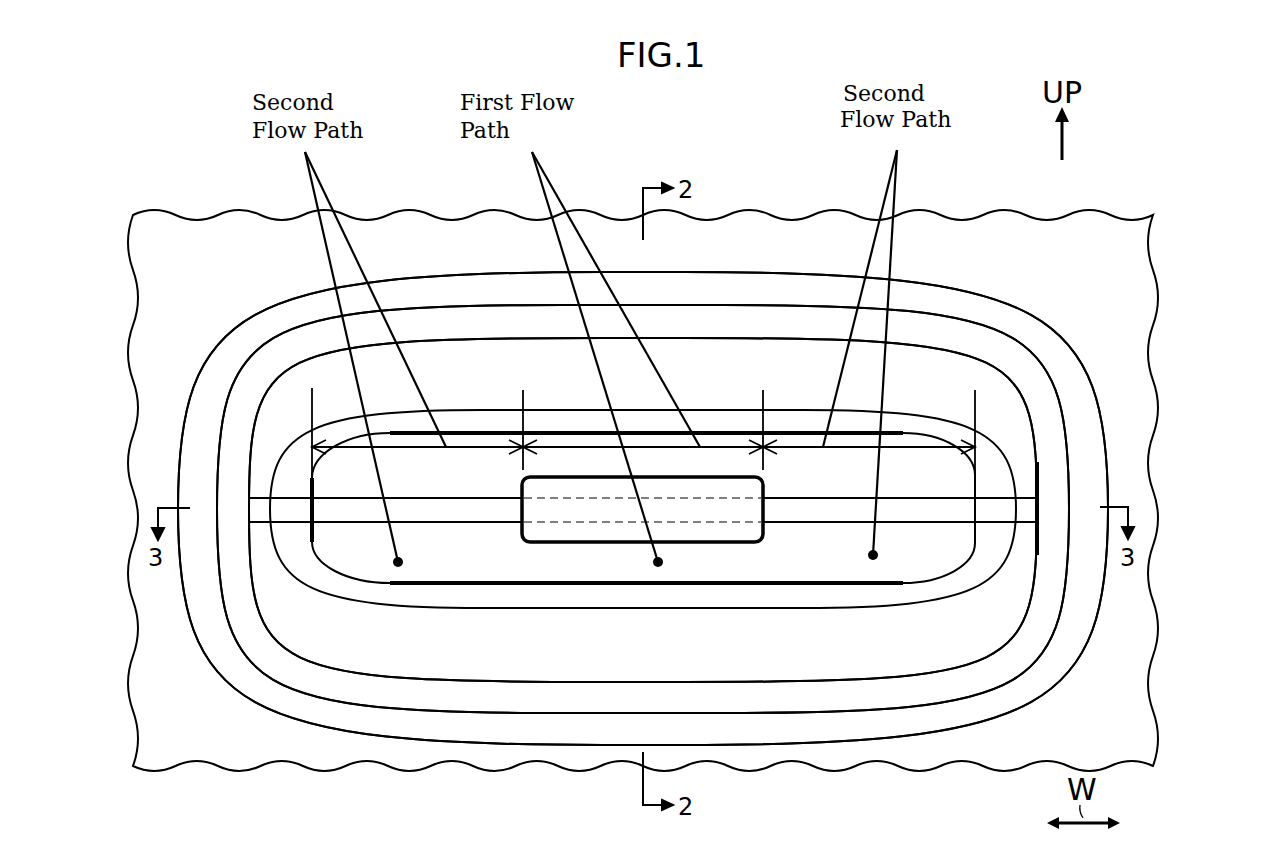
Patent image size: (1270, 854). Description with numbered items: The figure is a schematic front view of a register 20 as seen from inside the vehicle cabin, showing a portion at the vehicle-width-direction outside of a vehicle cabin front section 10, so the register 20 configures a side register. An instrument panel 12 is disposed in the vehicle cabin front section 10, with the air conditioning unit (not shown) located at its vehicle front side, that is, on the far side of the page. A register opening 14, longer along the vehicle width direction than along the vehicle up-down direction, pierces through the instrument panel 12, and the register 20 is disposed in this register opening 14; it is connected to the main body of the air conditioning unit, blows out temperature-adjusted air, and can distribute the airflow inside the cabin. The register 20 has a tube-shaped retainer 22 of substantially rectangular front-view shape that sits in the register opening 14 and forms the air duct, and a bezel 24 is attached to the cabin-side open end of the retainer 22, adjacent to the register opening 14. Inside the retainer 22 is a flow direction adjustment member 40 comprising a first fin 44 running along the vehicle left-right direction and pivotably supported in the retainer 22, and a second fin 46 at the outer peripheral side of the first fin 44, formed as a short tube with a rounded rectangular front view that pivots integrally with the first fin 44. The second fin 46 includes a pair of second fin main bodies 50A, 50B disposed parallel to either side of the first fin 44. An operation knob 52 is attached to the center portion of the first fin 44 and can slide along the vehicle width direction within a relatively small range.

The vehicle cabin front section 10 is at (1120, 237).
The instrument panel 12 is at (1130, 277).
The register opening 14 is at (483, 290).
The register 20 is at (1008, 282).
The retainer 22 is at (247, 393).
The bezel 24 is at (220, 358).
The flow direction adjustment member 40 is at (337, 630).
The first fin 44 is at (472, 506).
The second fin 46 is at (440, 611).
The second fin main body 50A is at (553, 428).
The second fin main body 50B is at (497, 588).
The operation knob 52 is at (572, 545).